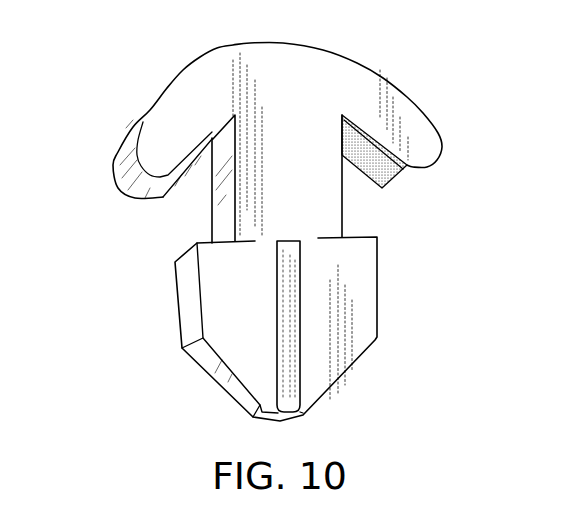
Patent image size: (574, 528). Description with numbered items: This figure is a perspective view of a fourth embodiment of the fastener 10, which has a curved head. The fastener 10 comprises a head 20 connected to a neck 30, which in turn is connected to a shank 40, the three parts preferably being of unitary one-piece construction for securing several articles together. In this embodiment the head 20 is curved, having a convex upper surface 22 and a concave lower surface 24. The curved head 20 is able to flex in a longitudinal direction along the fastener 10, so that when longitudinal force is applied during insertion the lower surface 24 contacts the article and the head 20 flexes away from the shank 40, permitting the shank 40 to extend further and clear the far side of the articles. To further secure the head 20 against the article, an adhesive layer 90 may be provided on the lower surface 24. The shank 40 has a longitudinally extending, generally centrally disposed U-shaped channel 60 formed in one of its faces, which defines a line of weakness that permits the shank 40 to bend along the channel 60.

The fastener 10 is at (100, 180).
The head 20 is at (407, 123).
The upper surface 22 is at (178, 87).
The lower surface 24 is at (383, 161).
The neck 30 is at (317, 205).
The shank 40 is at (353, 288).
The U-shaped channel 60 is at (276, 337).
The adhesive layer 90 is at (188, 172).